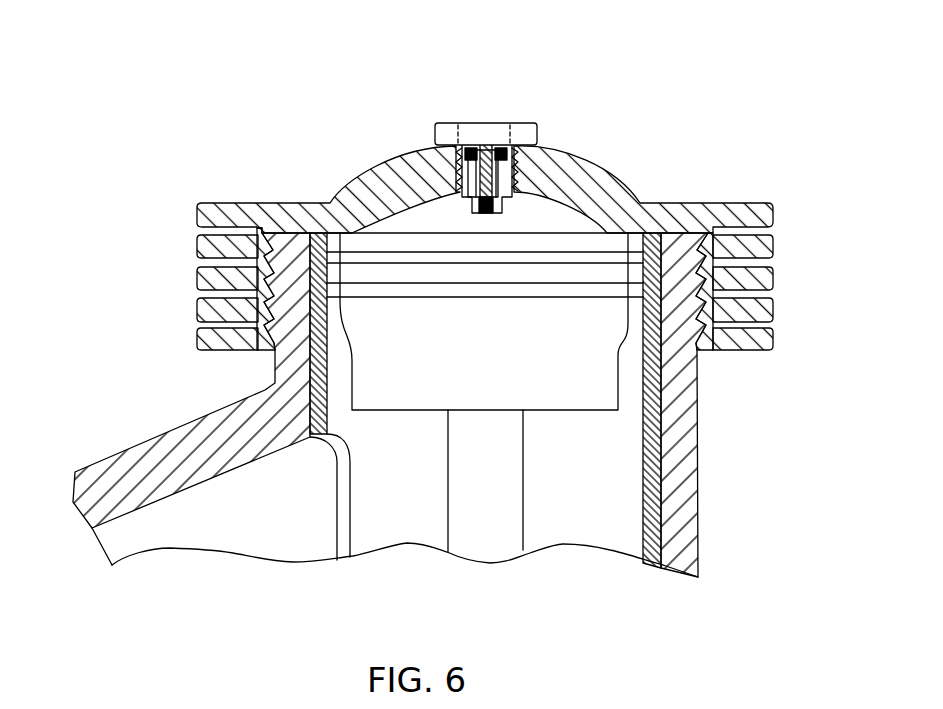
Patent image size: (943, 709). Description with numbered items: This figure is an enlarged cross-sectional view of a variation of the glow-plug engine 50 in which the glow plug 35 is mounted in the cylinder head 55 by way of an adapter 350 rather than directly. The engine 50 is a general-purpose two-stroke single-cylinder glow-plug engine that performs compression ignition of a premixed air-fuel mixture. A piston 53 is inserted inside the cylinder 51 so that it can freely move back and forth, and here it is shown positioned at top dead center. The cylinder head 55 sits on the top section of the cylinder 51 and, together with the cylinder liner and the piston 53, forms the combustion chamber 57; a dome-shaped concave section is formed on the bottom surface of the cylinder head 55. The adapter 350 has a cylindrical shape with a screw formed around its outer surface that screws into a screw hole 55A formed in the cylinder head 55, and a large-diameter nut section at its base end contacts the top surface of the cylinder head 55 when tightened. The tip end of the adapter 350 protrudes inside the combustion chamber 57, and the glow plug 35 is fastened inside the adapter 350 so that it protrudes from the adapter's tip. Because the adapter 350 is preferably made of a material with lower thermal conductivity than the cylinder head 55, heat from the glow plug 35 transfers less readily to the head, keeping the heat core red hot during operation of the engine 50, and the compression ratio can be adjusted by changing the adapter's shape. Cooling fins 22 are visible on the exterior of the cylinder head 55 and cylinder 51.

The engine 50 is at (677, 76).
The adapter 350 is at (440, 137).
The glow plug 35 is at (543, 144).
The screw hole 55A is at (520, 178).
The cylinder head 55 is at (625, 183).
The cooling fins 22 is at (737, 203).
The combustion chamber 57 is at (540, 225).
The cylinder 51 is at (700, 513).
The piston 53 is at (588, 385).